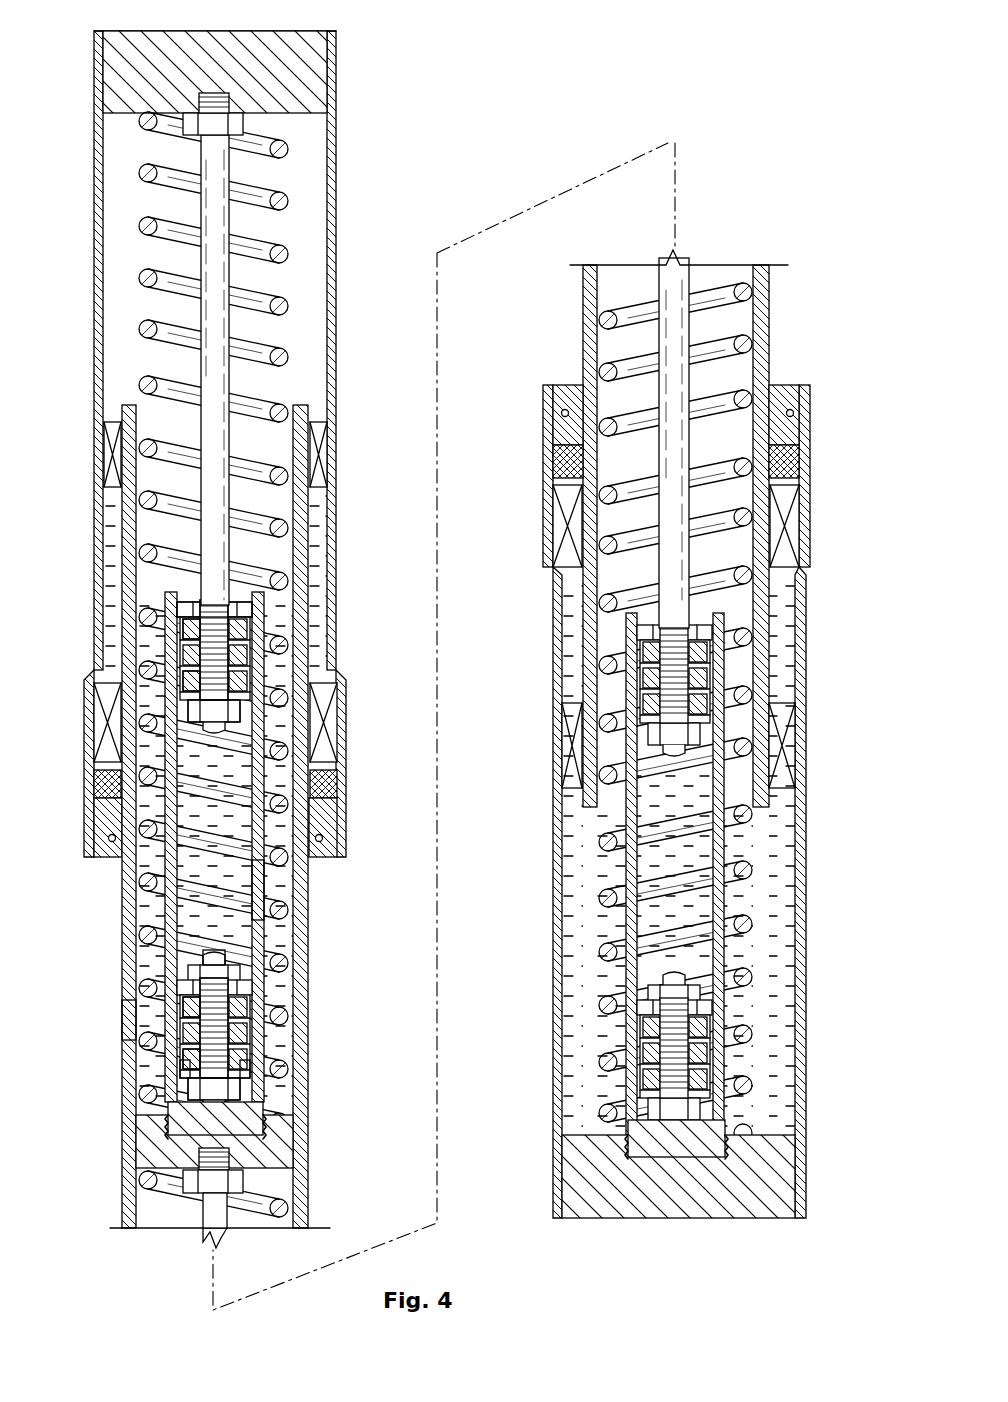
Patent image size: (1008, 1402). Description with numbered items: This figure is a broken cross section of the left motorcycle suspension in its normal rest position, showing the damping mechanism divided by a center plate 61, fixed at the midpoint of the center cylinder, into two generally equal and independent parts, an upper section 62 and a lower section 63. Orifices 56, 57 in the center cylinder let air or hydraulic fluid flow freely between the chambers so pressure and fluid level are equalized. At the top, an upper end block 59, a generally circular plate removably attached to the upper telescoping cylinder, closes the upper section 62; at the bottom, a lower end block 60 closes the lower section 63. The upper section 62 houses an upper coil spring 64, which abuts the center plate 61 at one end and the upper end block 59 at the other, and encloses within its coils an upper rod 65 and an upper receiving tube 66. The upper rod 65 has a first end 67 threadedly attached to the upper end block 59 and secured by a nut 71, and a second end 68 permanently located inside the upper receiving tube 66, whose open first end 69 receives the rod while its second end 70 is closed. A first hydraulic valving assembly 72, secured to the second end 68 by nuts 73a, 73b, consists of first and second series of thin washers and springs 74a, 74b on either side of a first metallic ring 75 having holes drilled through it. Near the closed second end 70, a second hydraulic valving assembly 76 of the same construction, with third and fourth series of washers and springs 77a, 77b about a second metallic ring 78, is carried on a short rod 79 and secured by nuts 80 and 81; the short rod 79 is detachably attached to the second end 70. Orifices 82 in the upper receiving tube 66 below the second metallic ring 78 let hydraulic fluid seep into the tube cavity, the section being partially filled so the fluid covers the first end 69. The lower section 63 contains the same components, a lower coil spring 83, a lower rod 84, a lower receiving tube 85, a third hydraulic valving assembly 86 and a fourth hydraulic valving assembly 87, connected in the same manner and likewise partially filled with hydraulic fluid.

The orifice 56 is at (305, 536).
The orifice 57 is at (120, 530).
The upper end block 59 is at (232, 38).
The lower end block 60 is at (680, 1210).
The center plate 61 is at (210, 1147).
The upper section 62 is at (230, 614).
The lower section 63 is at (549, 739).
The upper coil spring 64 is at (245, 262).
The upper rod 65 is at (207, 318).
The upper receiving tube 66 is at (266, 888).
The first end 67 is at (216, 156).
The second end 68 is at (322, 730).
The first end 69 is at (167, 600).
The second end 70 is at (160, 1022).
The nut 71 is at (190, 127).
The first hydraulic valving assembly 72 is at (224, 654).
The nut 73a is at (190, 712).
The nut 73b is at (250, 608).
The first series of washers and springs 74a is at (248, 684).
The second series of washers and springs 74b is at (245, 630).
The first metallic ring 75 is at (246, 652).
The second hydraulic valving assembly 76 is at (218, 1029).
The third series of washers and springs 77a is at (245, 997).
The fourth series of washers and springs 77b is at (248, 1042).
The second metallic ring 78 is at (246, 1026).
The short rod 79 is at (262, 1076).
The nut 80 is at (246, 960).
The nut 81 is at (192, 1092).
The orifices 82 is at (172, 1070).
The lower coil spring 83 is at (735, 290).
The lower rod 84 is at (690, 438).
The lower receiving tube 85 is at (738, 890).
The third hydraulic valving assembly 86 is at (728, 680).
The fourth hydraulic valving assembly 87 is at (728, 1010).